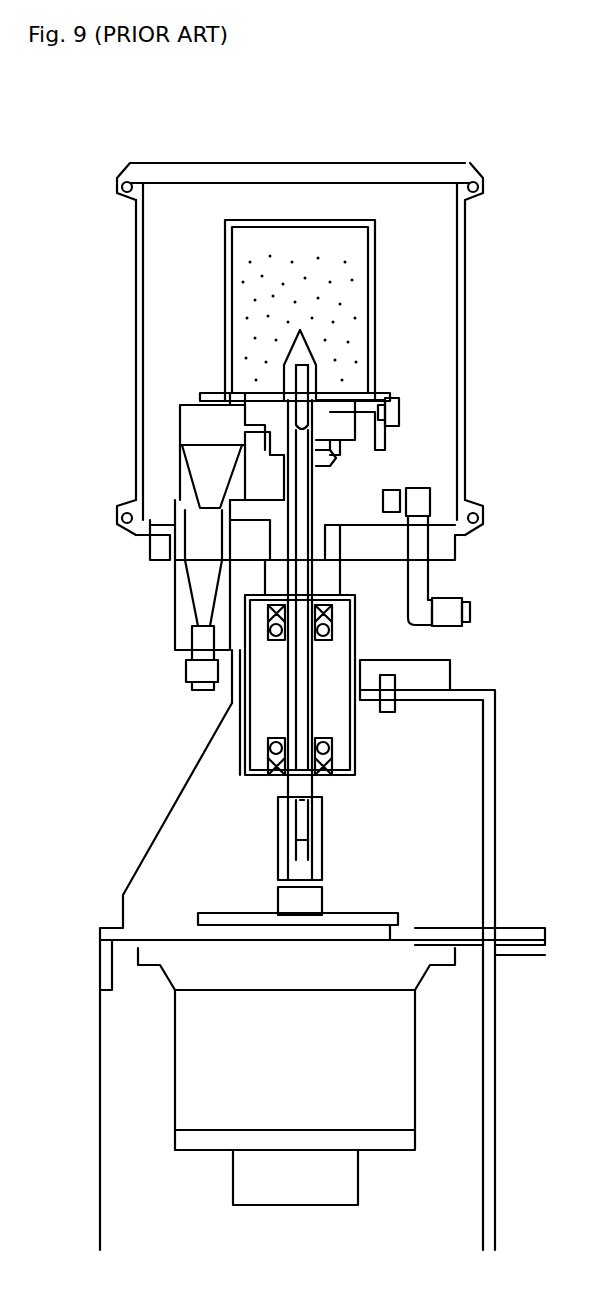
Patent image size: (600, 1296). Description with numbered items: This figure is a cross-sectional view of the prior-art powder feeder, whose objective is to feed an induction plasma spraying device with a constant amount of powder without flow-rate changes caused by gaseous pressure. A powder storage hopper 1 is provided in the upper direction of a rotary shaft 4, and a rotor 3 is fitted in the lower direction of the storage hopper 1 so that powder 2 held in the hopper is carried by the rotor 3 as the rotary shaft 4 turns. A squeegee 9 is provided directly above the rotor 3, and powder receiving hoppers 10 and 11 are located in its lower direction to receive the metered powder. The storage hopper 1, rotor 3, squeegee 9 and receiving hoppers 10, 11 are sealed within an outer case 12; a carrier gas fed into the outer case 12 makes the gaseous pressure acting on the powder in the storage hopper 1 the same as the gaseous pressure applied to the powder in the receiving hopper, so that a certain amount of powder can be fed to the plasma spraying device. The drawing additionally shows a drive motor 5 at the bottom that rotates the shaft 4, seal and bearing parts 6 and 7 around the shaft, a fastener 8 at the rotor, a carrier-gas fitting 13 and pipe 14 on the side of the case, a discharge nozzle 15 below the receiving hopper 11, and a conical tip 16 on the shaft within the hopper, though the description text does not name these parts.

The powder storage hopper 1 is at (352, 228).
The powder 2 is at (356, 296).
The rotor 3 is at (362, 400).
The rotary shaft 4 is at (312, 592).
The motor 5 is at (395, 1050).
The seal member 6 is at (380, 441).
The bearing 7 is at (335, 457).
The bolt 8 is at (400, 400).
The squeegee 9 is at (240, 397).
The powder receiving hopper 10 is at (192, 458).
The powder receiving hopper 11 is at (185, 575).
The outer case 12 is at (140, 257).
The air supply fitting 13 is at (455, 614).
The air pipe 14 is at (385, 498).
The nozzle 15 is at (190, 688).
The conical tip 16 is at (335, 393).